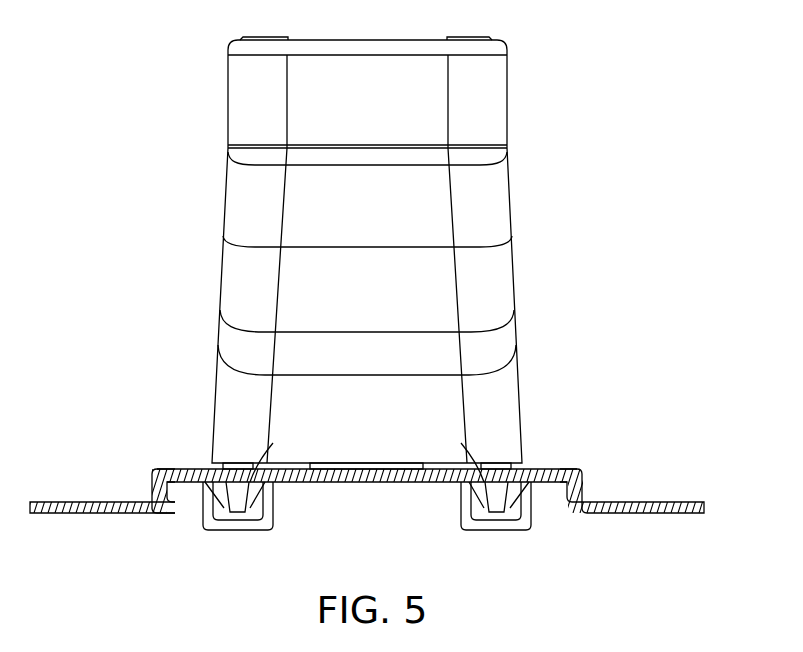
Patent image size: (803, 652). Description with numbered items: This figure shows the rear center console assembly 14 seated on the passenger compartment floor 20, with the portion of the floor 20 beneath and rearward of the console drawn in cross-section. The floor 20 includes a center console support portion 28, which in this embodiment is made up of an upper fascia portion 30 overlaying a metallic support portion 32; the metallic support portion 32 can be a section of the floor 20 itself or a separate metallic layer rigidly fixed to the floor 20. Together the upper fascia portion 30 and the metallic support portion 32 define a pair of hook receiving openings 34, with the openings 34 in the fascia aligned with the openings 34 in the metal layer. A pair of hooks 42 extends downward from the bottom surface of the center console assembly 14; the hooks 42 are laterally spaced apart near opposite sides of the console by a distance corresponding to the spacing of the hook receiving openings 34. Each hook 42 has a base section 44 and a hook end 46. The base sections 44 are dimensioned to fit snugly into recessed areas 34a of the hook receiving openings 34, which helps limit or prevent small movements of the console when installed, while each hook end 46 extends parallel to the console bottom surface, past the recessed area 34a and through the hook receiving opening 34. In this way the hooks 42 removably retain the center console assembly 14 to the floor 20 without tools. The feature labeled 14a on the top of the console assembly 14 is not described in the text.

The center console assembly 14 is at (522, 77).
The housing tab 14a is at (244, 38).
The floor 20 is at (662, 501).
The center console support portion 28 is at (375, 479).
The upper fascia portion 30 is at (172, 468).
The metallic support portion 32 is at (172, 501).
The hook receiving openings 34 is at (368, 500).
The recessed areas 34a is at (262, 463).
The hooks 42 is at (189, 469).
The base section 44 is at (215, 507).
The hook end 46 is at (238, 500).